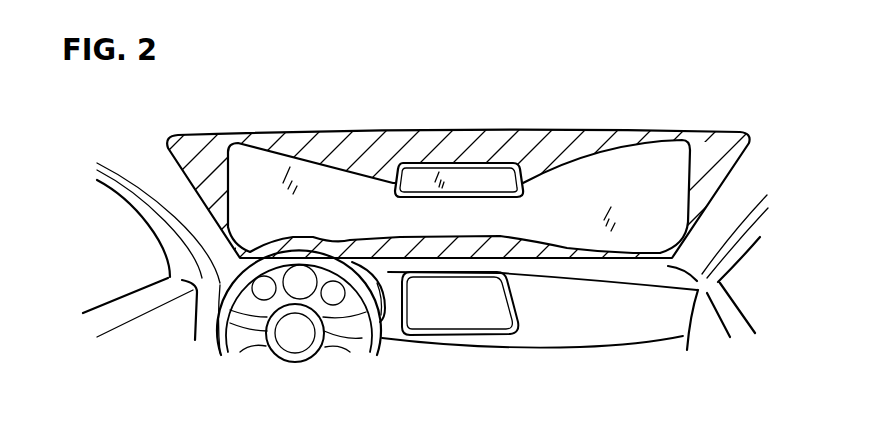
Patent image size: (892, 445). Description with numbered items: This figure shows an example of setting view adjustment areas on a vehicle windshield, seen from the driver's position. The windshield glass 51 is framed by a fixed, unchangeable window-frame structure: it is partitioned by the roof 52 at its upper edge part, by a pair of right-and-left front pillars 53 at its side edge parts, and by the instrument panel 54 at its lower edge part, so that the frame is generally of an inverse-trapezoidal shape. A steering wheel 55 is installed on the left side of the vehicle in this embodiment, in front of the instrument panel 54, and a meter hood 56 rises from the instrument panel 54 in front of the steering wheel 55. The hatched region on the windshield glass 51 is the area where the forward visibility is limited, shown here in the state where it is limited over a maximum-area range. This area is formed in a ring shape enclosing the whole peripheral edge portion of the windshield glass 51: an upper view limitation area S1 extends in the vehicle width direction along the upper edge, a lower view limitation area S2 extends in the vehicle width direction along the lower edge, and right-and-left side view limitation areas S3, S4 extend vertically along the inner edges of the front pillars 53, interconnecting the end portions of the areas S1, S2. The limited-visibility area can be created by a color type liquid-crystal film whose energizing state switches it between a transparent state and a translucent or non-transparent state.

The windshield glass 51 is at (627, 173).
The roof 52 is at (443, 112).
The front pillars 53 is at (188, 207).
The instrument panel 54 is at (595, 270).
The steering wheel 55 is at (372, 357).
The meter hood 56 is at (357, 270).
The upper view limitation area S1 is at (502, 140).
The lower view limitation area S2 is at (523, 248).
The side view limitation area S3 is at (197, 165).
The side view limitation area S4 is at (713, 163).